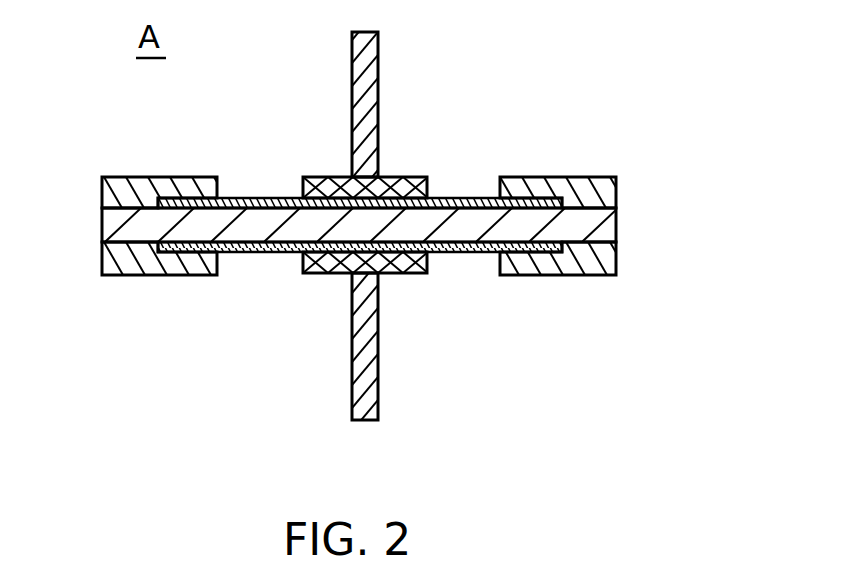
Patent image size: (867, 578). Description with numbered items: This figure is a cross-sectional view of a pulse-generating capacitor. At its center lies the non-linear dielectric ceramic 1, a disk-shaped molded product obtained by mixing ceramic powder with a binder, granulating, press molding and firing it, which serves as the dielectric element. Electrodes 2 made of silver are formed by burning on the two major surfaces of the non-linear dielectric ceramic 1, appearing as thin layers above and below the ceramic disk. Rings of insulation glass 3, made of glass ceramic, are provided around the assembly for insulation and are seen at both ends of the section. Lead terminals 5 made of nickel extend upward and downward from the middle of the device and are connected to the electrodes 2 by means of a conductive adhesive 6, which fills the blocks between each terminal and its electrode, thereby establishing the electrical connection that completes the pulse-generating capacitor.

The non-linear dielectric ceramic 1 is at (597, 225).
The electrodes 2 is at (458, 192).
The insulation glass 3 is at (150, 184).
The lead terminals 5 is at (368, 108).
The conductive adhesive 6 is at (394, 181).